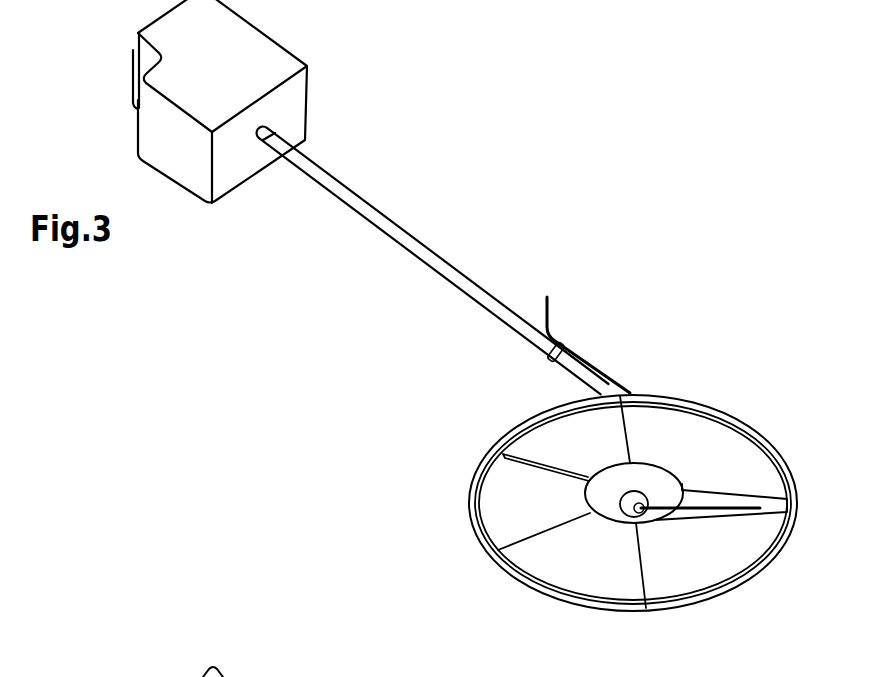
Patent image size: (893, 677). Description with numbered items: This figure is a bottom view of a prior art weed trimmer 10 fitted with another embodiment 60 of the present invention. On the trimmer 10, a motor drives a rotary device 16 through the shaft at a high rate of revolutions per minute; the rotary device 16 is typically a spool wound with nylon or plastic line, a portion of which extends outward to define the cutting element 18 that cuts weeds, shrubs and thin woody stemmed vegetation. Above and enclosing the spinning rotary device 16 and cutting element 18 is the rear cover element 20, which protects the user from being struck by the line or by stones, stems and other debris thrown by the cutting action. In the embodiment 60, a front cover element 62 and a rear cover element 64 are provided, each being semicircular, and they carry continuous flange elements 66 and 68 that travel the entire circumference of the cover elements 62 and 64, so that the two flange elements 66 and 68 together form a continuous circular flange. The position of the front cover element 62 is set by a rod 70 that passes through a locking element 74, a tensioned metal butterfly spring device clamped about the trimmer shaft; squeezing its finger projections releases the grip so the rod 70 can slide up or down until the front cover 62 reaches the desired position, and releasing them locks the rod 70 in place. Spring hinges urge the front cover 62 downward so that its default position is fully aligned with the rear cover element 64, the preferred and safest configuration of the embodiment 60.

The weed trimmer 10 is at (360, 205).
The rotary device 16 is at (635, 510).
The cutting element 18 is at (710, 507).
The rear cover element 20 is at (522, 496).
The embodiment of the present invention 60 is at (810, 542).
The front cover element 62 is at (678, 437).
The rear cover element 64 is at (540, 418).
The flange element 66 is at (645, 398).
The flange element 68 is at (543, 580).
The rod 70 is at (545, 312).
The locking element 74 is at (567, 345).